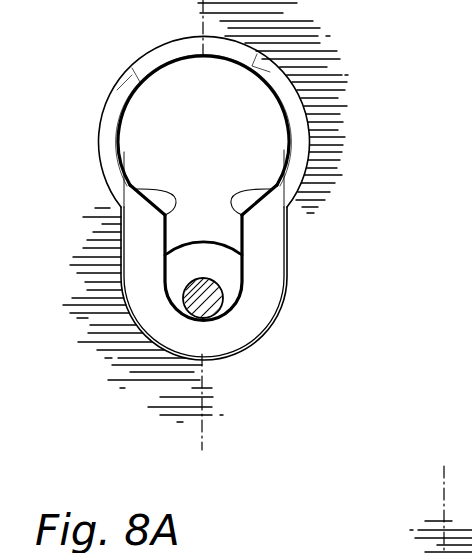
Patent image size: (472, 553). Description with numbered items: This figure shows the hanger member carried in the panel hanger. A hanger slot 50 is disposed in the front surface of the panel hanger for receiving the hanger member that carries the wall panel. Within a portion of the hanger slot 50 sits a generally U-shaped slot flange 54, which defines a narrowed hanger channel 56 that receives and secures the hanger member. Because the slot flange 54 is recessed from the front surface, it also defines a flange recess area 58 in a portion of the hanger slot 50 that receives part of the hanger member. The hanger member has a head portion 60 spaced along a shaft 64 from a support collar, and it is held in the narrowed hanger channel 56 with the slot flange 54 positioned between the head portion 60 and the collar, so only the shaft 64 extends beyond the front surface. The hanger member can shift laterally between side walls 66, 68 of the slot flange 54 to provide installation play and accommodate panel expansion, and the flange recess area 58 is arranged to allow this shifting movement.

The hanger slot 50 is at (176, 111).
The slot flange 54 is at (268, 306).
The narrowed hanger channel 56 is at (215, 225).
The flange recess area 58 is at (211, 341).
The head portion 60 is at (228, 283).
The shaft 64 is at (223, 300).
The side wall 66 is at (273, 184).
The side wall 68 is at (133, 187).